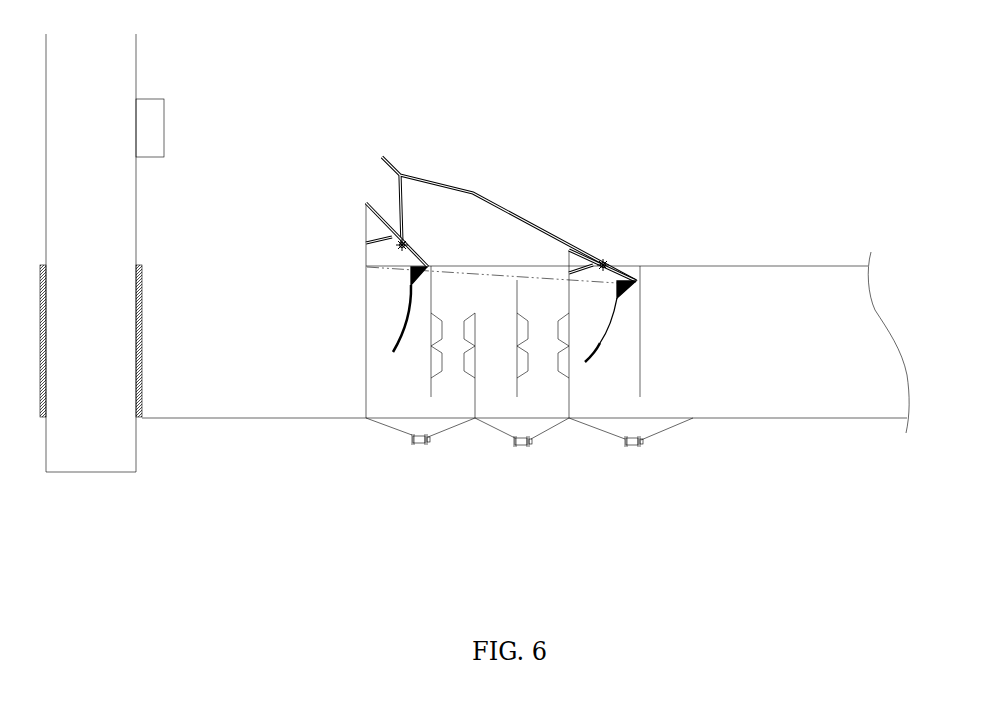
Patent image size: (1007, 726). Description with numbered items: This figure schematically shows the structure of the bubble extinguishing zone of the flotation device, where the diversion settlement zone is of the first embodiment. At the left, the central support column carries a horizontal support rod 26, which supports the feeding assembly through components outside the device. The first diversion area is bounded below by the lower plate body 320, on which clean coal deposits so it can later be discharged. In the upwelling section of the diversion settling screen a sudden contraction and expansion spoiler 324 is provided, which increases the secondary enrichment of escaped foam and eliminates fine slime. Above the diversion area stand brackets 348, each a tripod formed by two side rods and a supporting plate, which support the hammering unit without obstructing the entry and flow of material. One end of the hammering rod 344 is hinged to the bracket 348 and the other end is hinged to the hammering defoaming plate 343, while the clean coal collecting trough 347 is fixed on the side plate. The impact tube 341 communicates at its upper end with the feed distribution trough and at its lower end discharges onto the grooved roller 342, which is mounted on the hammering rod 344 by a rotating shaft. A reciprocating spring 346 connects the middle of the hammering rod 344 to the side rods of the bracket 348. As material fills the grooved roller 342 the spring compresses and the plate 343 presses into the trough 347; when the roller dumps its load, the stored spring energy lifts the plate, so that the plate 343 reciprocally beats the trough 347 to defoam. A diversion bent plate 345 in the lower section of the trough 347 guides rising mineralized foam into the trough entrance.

The horizontal support rod 26 is at (158, 107).
The lower plate body 320 is at (787, 418).
The sudden contraction and expansion spoiler 324 is at (472, 353).
The impact tube 341 is at (403, 210).
The grooved roller 342 is at (398, 247).
The hammering defoaming plate 343 is at (408, 273).
The hammering rod 344 is at (628, 273).
The diversion bent plate 345 is at (598, 343).
The reciprocating spring 346 is at (398, 245).
The clean coal collecting trough 347 is at (639, 268).
The bracket 348 is at (398, 246).